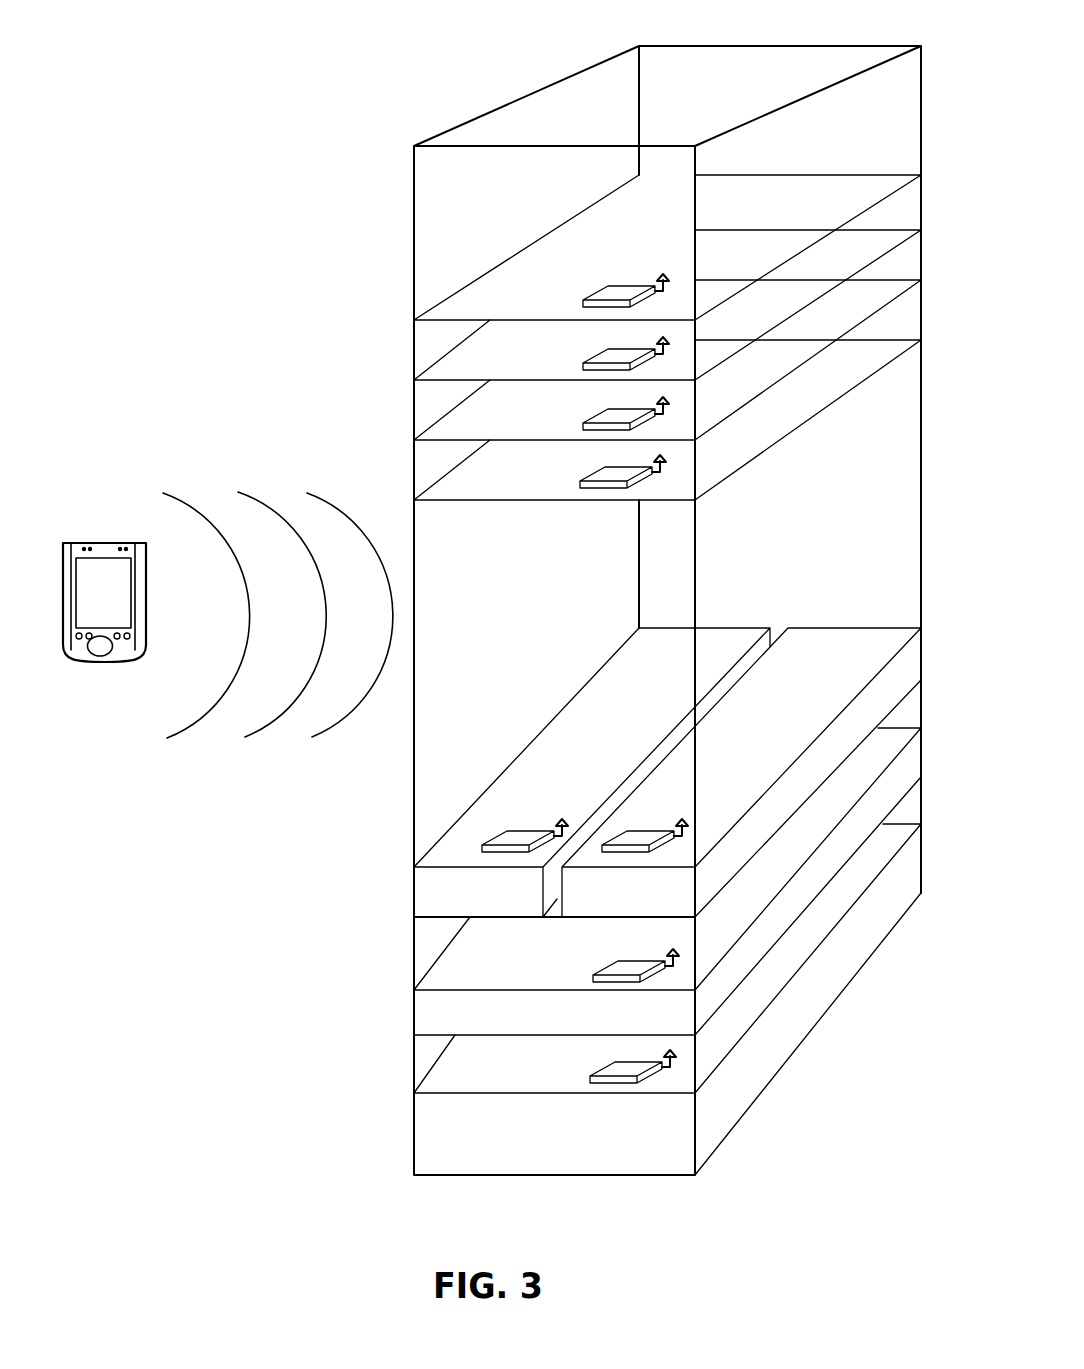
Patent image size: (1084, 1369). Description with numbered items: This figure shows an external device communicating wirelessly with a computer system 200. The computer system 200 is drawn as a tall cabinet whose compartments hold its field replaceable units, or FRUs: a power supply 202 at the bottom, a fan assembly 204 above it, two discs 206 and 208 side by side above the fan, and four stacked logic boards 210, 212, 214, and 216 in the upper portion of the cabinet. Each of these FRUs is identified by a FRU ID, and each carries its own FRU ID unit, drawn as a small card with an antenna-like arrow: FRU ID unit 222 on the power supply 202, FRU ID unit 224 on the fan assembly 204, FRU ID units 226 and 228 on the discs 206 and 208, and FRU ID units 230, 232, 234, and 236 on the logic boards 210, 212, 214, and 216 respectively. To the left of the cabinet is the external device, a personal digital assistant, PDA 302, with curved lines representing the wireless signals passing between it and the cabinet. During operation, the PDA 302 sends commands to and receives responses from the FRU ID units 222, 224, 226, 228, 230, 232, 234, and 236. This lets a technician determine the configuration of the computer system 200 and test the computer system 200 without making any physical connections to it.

The computer system 200 is at (414, 355).
The power supply 202 is at (667, 999).
The fan assembly 204 is at (667, 881).
The disc 206 is at (592, 772).
The disc 208 is at (741, 772).
The logic board 210 is at (667, 420).
The logic board 212 is at (667, 360).
The logic board 214 is at (667, 303).
The logic board 216 is at (667, 245).
The FRU ID unit 222 is at (590, 1067).
The FRU ID unit 224 is at (593, 969).
The FRU ID unit 226 is at (511, 835).
The FRU ID unit 228 is at (650, 835).
The FRU ID unit 230 is at (580, 483).
The FRU ID unit 232 is at (583, 424).
The FRU ID unit 234 is at (583, 363).
The FRU ID unit 236 is at (583, 303).
The personal digital assistant (PDA) 302 is at (104, 635).